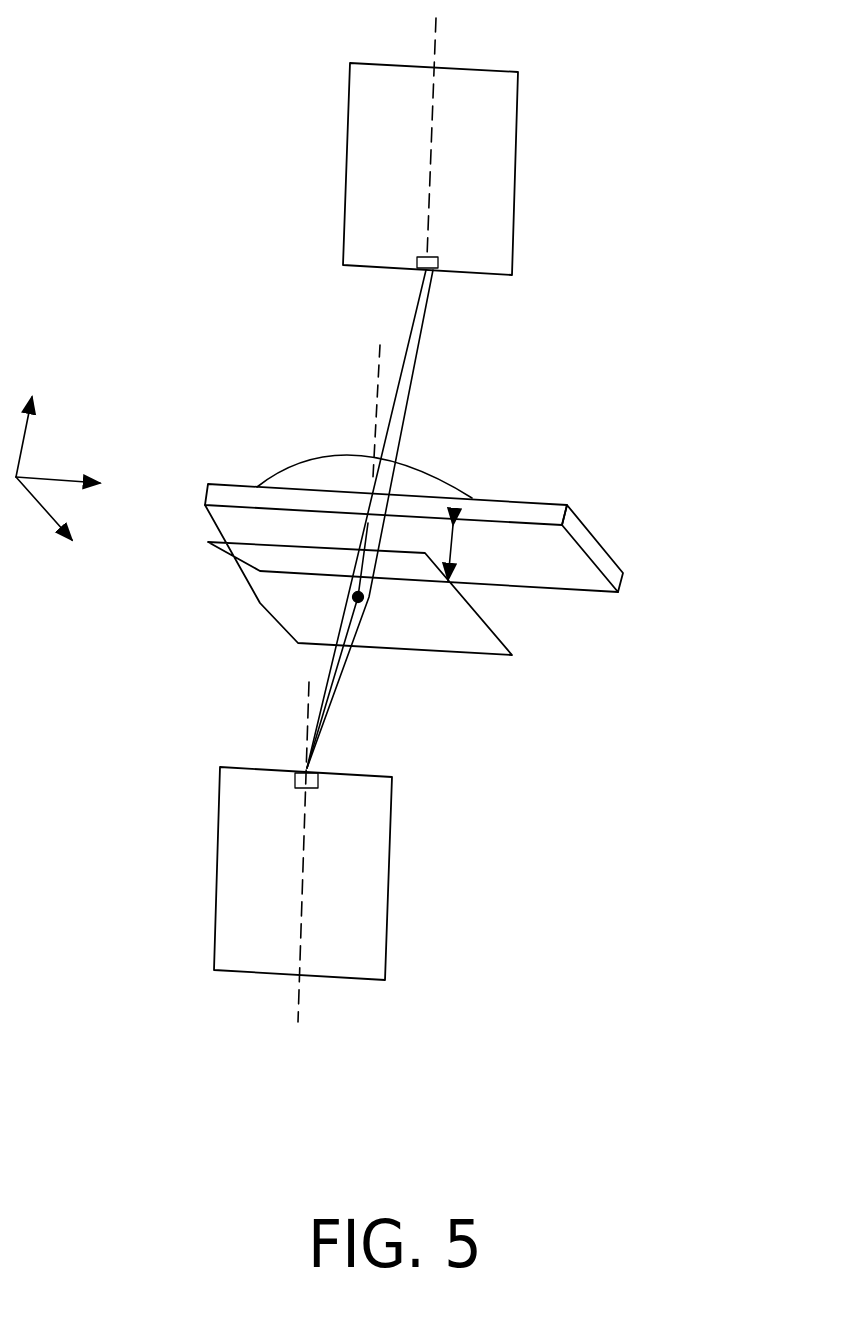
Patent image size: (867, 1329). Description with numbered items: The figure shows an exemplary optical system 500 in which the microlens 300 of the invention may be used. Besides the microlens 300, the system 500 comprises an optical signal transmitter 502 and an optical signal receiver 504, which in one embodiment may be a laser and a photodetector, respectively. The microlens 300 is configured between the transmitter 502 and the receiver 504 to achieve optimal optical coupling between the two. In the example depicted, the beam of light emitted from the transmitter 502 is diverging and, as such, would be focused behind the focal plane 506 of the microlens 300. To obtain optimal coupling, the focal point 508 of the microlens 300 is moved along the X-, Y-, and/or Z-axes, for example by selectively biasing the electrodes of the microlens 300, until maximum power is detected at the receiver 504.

The optical system 500 is at (132, 67).
The optical signal transmitter 502 is at (517, 95).
The microlens 300 is at (630, 479).
The focal plane 506 is at (260, 603).
The focal point 508 is at (362, 597).
The optical signal receiver 504 is at (216, 912).